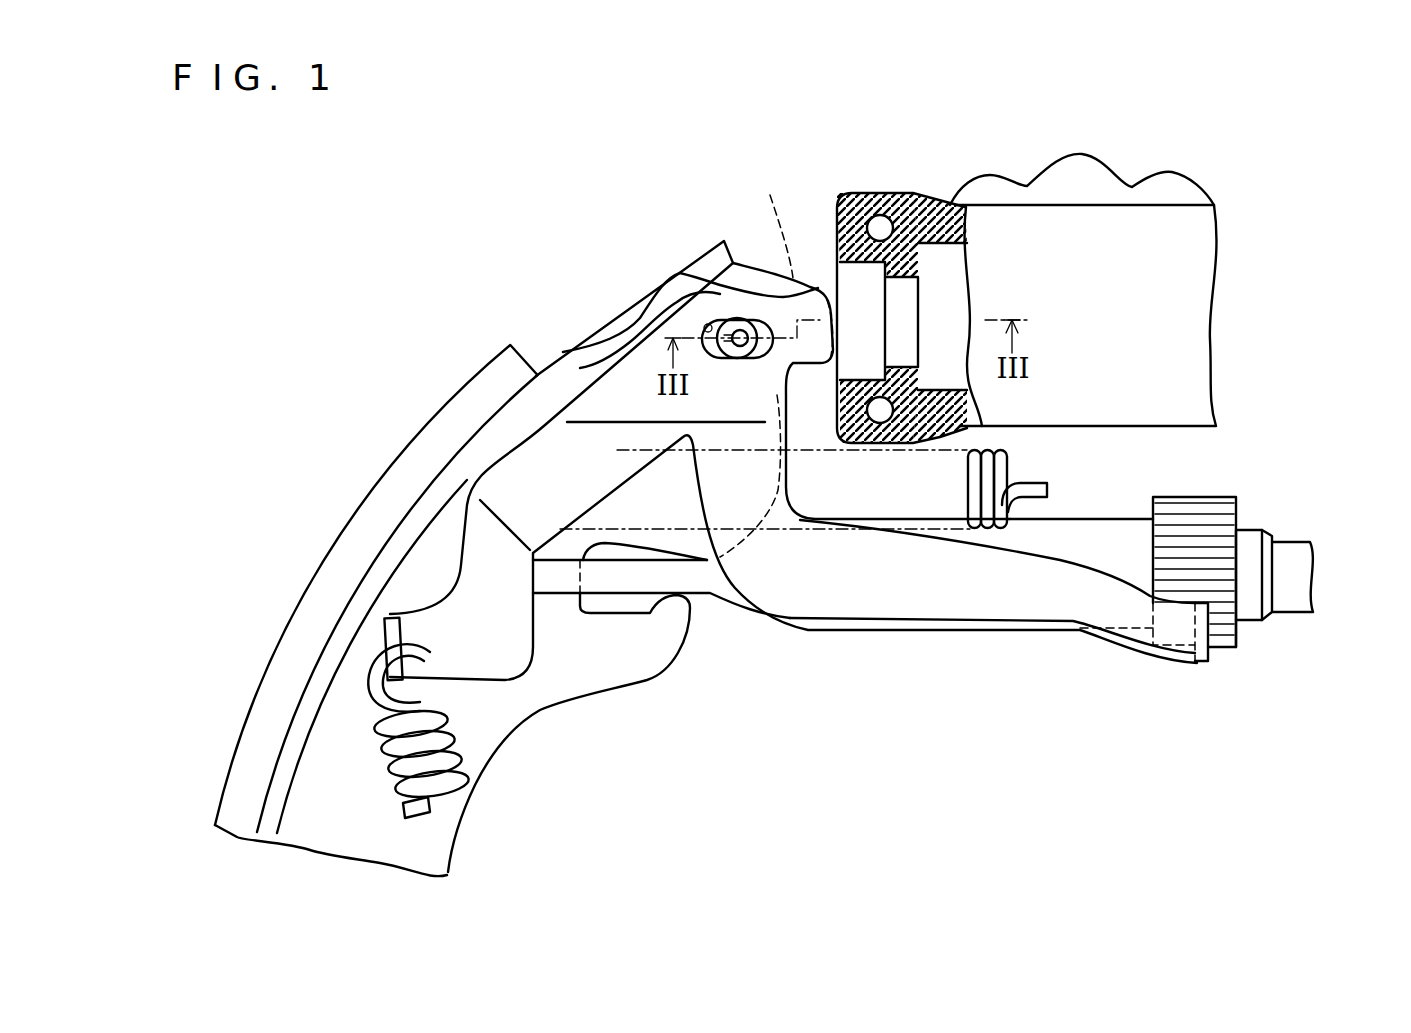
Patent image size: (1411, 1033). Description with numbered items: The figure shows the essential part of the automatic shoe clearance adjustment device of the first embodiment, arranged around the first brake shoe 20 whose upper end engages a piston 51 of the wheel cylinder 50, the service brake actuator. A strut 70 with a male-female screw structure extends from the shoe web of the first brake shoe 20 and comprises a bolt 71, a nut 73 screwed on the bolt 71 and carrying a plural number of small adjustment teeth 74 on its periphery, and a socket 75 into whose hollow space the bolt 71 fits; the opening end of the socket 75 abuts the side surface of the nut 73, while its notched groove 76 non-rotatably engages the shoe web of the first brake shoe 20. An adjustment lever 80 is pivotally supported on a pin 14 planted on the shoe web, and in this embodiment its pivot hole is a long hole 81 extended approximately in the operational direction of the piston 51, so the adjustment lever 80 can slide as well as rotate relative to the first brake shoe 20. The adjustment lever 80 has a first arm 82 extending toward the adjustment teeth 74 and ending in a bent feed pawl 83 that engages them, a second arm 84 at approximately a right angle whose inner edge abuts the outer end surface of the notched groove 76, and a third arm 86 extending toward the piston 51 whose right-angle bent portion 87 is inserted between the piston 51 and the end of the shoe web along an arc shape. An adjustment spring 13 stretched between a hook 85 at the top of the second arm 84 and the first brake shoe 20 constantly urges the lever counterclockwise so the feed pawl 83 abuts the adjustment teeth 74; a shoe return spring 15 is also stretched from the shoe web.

The first brake shoe 20 is at (403, 455).
The adjustment lever 80 is at (585, 390).
The long hole 81 is at (697, 328).
The pin 14 is at (733, 320).
The bent portion 87 is at (770, 225).
The piston 51 is at (853, 277).
The wheel cylinder 50 is at (1097, 203).
The second arm 84 is at (465, 550).
The hook 85 is at (379, 638).
The adjustment spring 13 is at (453, 783).
The notched groove 76 is at (557, 587).
The strut 70 is at (843, 634).
The first arm 82 is at (953, 612).
The feed pawl 83 is at (1210, 665).
The third arm 86 is at (813, 362).
The shoe return spring 15 is at (1000, 468).
The socket 75 is at (1117, 527).
The adjustment teeth 74 is at (1195, 507).
The bolt 71 is at (1248, 547).
The nut 73 is at (1240, 637).